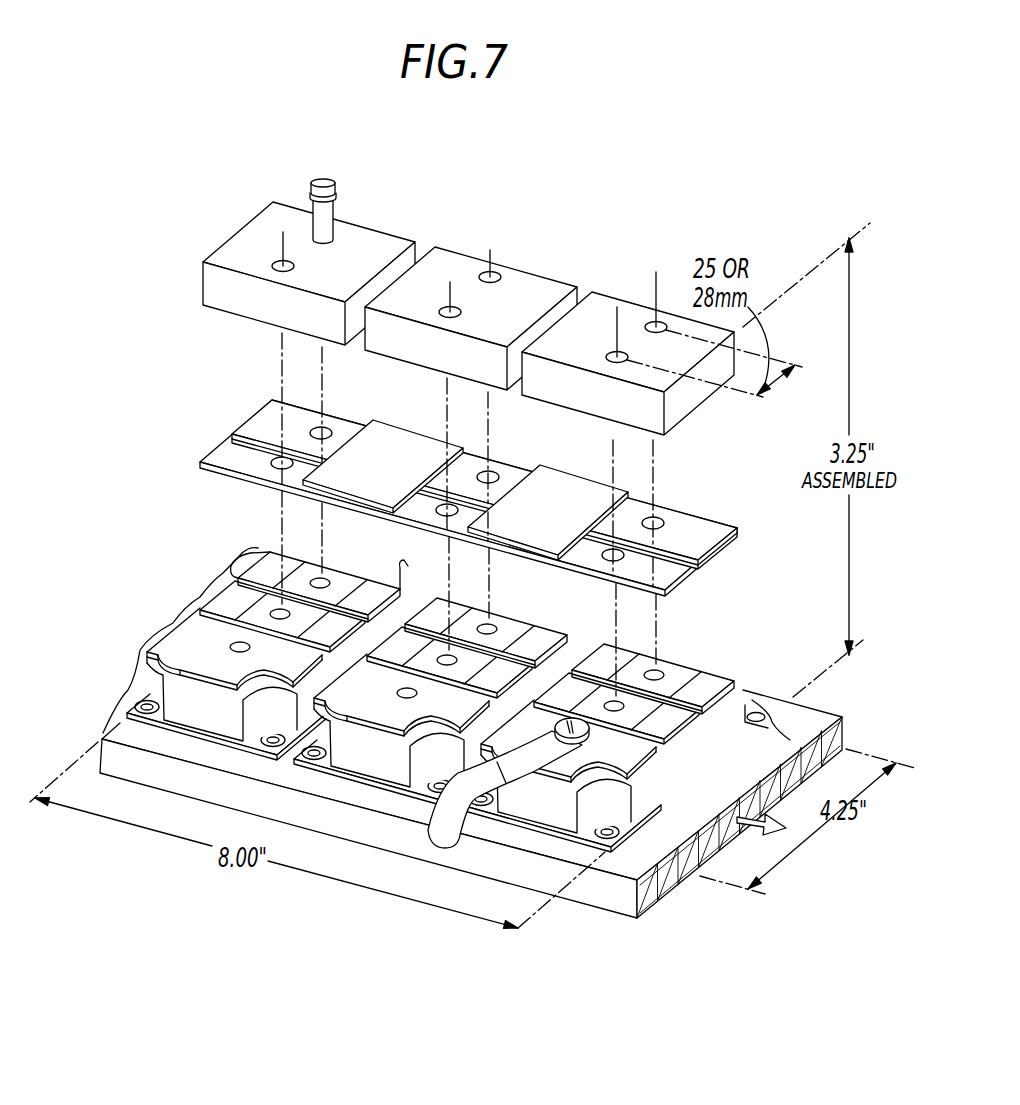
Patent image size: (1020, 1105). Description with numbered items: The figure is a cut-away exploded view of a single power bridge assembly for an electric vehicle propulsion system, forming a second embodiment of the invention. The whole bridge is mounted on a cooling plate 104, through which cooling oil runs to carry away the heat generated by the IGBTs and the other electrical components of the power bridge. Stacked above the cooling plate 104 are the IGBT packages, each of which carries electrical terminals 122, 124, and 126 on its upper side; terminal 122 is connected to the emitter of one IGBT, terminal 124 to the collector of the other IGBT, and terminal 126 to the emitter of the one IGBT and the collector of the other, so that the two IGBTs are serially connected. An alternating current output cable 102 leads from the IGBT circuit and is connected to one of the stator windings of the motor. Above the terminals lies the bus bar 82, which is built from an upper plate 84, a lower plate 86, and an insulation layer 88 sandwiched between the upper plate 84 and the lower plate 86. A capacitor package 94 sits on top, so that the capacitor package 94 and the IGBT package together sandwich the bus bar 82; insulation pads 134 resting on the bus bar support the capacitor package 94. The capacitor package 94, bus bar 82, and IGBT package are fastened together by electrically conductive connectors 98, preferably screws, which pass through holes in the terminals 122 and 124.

The bus bar 82 is at (445, 504).
The upper plate 84 is at (735, 540).
The lower plate 86 is at (687, 572).
The insulation layer 88 is at (501, 489).
The capacitor package 94 is at (238, 247).
The electrically conductive connector 98 is at (327, 180).
The alternating current output cable 102 is at (440, 826).
The cooling plate 104 is at (471, 766).
The electrical terminal 122 is at (253, 555).
The electrical terminal 124 is at (250, 577).
The electrical terminal 126 is at (458, 699).
The insulation pad 134 is at (545, 477).